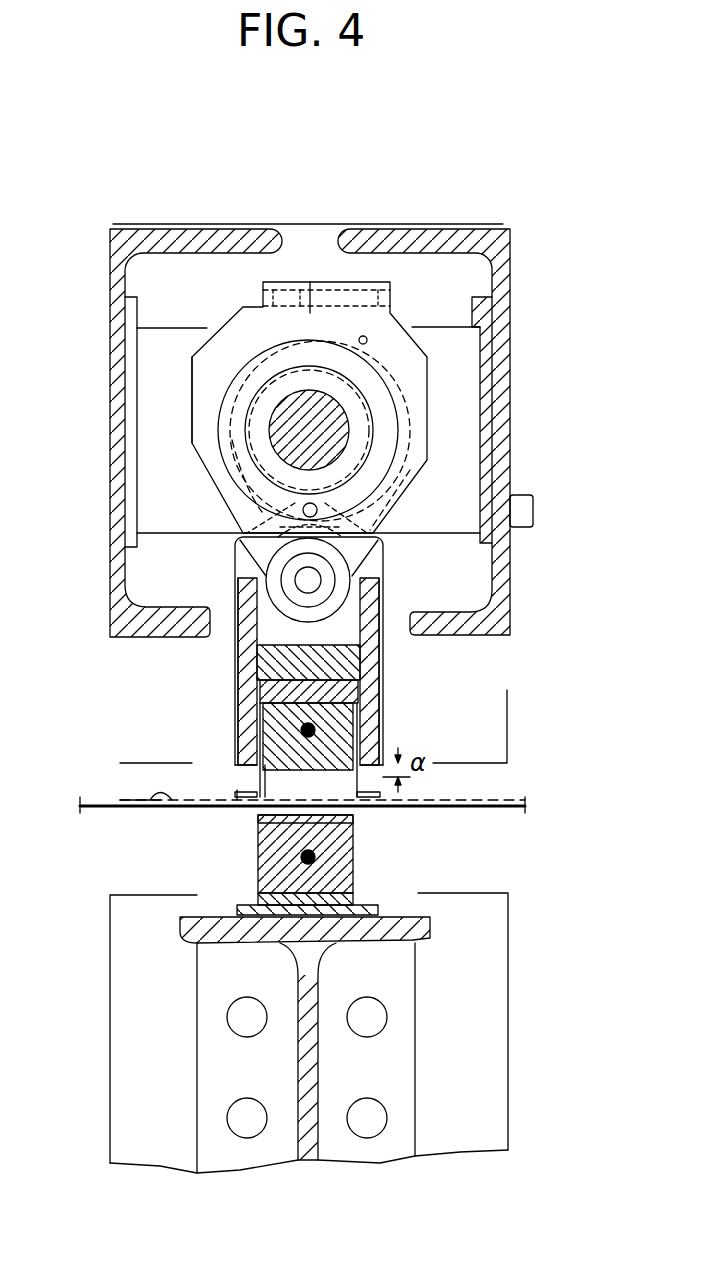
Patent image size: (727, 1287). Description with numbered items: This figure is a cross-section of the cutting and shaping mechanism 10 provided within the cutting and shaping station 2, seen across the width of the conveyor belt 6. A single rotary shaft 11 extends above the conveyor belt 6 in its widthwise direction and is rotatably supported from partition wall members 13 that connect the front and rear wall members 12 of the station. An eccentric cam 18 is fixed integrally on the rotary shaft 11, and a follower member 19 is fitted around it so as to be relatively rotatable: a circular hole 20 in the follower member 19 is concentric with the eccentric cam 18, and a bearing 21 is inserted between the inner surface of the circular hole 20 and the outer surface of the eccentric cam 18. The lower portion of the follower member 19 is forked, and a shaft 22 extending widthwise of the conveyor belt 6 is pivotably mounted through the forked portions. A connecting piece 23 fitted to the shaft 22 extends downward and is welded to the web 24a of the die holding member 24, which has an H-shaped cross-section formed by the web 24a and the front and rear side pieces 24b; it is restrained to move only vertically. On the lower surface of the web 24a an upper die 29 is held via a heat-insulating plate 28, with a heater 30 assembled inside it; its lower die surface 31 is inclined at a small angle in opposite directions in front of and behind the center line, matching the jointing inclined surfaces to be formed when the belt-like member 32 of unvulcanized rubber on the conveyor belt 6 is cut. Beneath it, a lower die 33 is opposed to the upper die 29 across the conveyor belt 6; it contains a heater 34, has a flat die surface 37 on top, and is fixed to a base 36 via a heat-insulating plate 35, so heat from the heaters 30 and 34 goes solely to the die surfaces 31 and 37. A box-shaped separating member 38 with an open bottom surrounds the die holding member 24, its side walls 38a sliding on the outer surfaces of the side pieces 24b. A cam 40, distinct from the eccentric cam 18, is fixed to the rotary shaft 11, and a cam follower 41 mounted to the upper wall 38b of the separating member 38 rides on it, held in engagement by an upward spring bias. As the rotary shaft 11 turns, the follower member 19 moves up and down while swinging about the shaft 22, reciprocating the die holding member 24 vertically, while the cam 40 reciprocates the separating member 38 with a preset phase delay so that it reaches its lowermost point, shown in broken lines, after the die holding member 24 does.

The cutting and shaping station 2 is at (525, 470).
The conveyor belt 6 is at (512, 802).
The cutting and shaping mechanism 10 is at (305, 265).
The rotary shaft 11 is at (340, 425).
The front and rear wall members 12 is at (112, 374).
The partition wall members 13 is at (512, 408).
The eccentric cam 18 is at (370, 368).
The follower member 19 is at (192, 445).
The circular hole 20 is at (362, 343).
The bearing 21 is at (262, 343).
The shaft 22 is at (313, 580).
The connecting piece 23 is at (350, 640).
The die holding member 24 is at (385, 710).
The web 24a is at (260, 698).
The front and rear side pieces 24b is at (247, 630).
The heat-insulating plate 28 is at (385, 738).
The upper die 29 is at (250, 768).
The heater 30 is at (277, 747).
The die surface 31 is at (238, 810).
The belt-like member 32 is at (155, 800).
The lower die 33 is at (355, 845).
The heater 34 is at (300, 857).
The heat-insulating plate 35 is at (360, 898).
The base 36 is at (415, 940).
The die surface 37 is at (345, 818).
The separating member 38 is at (386, 596).
The side walls 38a is at (238, 668).
The upper wall 38b is at (233, 508).
The cam 40 is at (392, 480).
The cam follower 41 is at (287, 507).